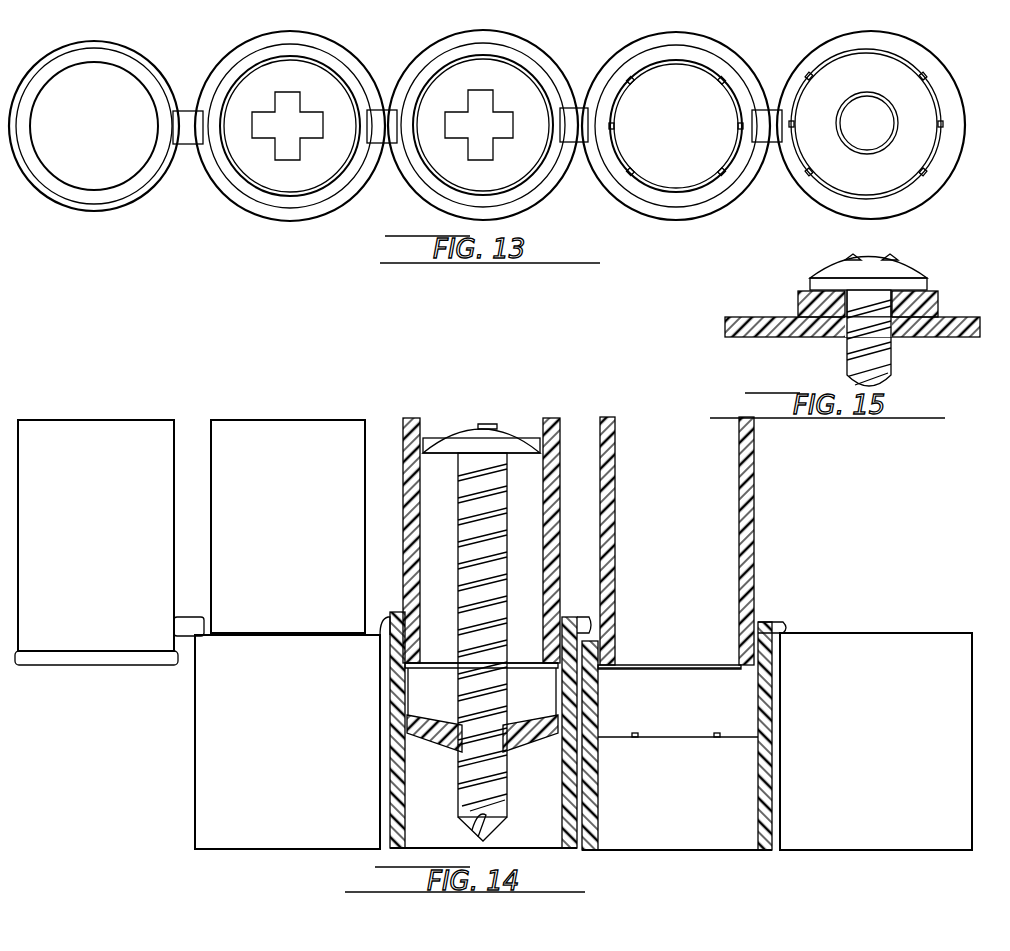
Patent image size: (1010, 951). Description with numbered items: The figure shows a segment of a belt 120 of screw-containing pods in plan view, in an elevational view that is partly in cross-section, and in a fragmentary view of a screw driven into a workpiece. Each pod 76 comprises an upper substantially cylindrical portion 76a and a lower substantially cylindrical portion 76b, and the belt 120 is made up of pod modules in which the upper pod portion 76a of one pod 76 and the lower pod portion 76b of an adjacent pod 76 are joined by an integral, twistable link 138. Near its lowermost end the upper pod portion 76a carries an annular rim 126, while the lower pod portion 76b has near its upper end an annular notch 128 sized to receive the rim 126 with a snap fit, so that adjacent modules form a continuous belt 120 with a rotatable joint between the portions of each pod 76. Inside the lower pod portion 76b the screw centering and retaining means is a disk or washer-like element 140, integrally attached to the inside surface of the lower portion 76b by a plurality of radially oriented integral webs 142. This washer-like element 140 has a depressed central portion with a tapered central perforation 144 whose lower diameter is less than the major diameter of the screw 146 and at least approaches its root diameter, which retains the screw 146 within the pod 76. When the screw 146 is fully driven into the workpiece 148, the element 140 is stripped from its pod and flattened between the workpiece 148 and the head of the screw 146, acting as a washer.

In FIG. 14, the pod 76 is at (413, 418).
In FIG. 13, the upper pod portion 76a is at (110, 198).
In FIG. 14, the upper pod portion 76a is at (740, 532).
In FIG. 13, the lower pod portion 76b is at (900, 236).
In FIG. 14, the lower pod portion 76b is at (758, 826).
In FIG. 13, the belt 120 is at (528, 42).
In FIG. 14, the belt 120 is at (568, 425).
In FIG. 13, the annular rim 126 is at (66, 207).
In FIG. 14, the annular rim 126 is at (35, 660).
In FIG. 14, the annular notch 128 is at (604, 673).
In FIG. 13, the integral link 138 is at (185, 144).
In FIG. 14, the integral link 138 is at (188, 625).
In FIG. 13, the washer-like element 140 is at (855, 182).
In FIG. 15, the washer-like element 140 is at (938, 298).
In FIG. 14, the washer-like element 140 is at (520, 748).
In FIG. 13, the radially oriented integral webs 142 is at (938, 126).
In FIG. 14, the radially oriented integral webs 142 is at (411, 702).
In FIG. 13, the central perforation 144 is at (895, 107).
In FIG. 14, the central perforation 144 is at (445, 748).
In FIG. 13, the screw 146 is at (268, 178).
In FIG. 15, the screw 146 is at (897, 272).
In FIG. 14, the screw 146 is at (502, 432).
In FIG. 15, the workpiece 148 is at (930, 337).